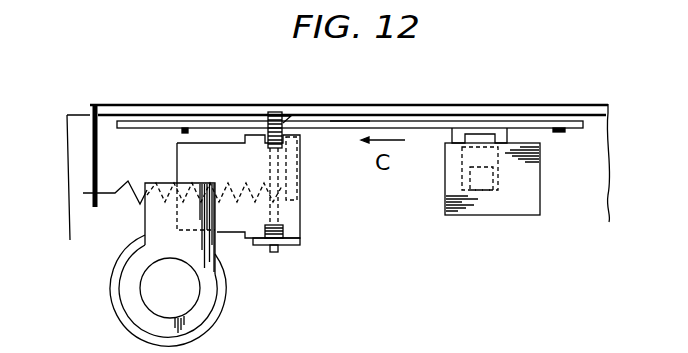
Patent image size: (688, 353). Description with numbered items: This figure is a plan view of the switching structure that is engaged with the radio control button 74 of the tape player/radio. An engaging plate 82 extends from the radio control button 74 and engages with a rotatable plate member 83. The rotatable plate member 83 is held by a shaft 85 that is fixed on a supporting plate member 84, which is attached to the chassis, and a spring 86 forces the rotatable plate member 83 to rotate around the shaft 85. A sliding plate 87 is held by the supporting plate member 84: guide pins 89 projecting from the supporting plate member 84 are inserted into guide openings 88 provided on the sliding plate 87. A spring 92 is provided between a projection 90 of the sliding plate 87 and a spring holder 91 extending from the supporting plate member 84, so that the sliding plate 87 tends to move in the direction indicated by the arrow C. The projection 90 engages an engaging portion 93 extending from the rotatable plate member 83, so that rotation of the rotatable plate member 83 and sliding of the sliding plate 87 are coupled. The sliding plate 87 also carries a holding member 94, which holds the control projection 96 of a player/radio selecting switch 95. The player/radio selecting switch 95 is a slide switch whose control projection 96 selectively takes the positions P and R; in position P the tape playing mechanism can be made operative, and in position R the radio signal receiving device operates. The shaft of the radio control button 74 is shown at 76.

The radio control button 74 is at (137, 277).
The shaft 76 is at (147, 292).
The engaging plate 82 is at (157, 225).
The rotatable plate member 83 is at (230, 225).
The supporting plate member 84 is at (230, 107).
The shaft 85 is at (275, 253).
The spring 86 is at (292, 108).
The sliding plate 87 is at (348, 123).
The guide openings 88 is at (157, 107).
The guide pins 89 is at (183, 132).
The projection 90 is at (300, 200).
The spring holder 91 is at (93, 150).
The spring 92 is at (130, 182).
The engaging portion 93 is at (297, 143).
The holding member 94 is at (450, 136).
The player/radio selecting switch 95 is at (517, 220).
The control projection 96 is at (452, 218).